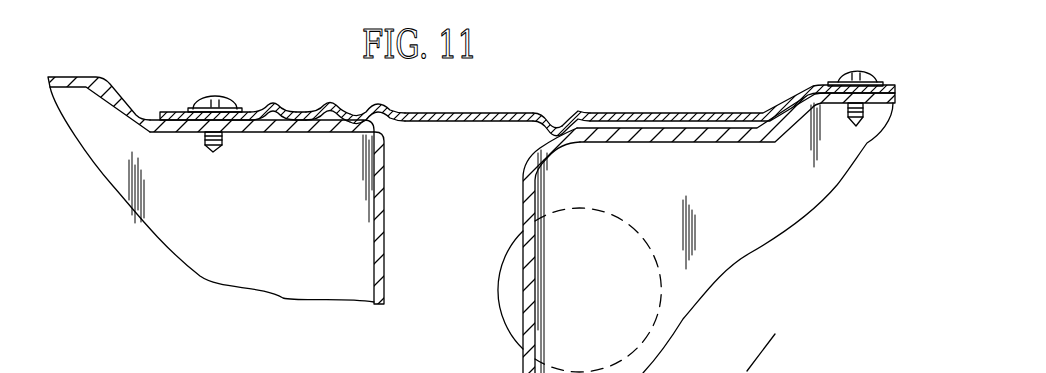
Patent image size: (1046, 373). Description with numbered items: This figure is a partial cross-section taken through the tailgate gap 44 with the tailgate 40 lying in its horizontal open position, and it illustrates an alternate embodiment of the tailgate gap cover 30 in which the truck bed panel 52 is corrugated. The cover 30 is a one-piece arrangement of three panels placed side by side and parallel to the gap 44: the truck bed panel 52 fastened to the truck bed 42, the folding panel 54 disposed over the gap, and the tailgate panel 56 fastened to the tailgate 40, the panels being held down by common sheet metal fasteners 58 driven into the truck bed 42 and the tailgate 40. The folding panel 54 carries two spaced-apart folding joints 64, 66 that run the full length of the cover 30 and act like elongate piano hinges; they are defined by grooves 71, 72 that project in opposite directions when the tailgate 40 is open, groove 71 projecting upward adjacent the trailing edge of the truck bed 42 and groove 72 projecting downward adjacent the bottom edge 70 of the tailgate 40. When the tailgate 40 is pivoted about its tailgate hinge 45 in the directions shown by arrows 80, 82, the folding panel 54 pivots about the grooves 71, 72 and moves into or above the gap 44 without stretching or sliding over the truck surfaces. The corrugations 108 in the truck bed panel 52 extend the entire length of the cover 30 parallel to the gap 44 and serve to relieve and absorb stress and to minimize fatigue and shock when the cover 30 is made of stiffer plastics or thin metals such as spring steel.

The tailgate gap cover 30 is at (536, 54).
The tailgate 40 is at (832, 194).
The truck bed 42 is at (82, 77).
The tailgate gap 44 is at (450, 287).
The tailgate hinge 45 is at (500, 330).
The truck bed panel 52 is at (336, 96).
The folding panel 54 is at (465, 110).
The tailgate panel 56 is at (707, 122).
The sheet metal fastener 58 is at (205, 97).
The folding joint 64 is at (386, 105).
The folding joint 66 is at (570, 112).
The bottom edge of the tailgate 70 is at (510, 168).
The groove 71 is at (380, 100).
The groove 72 is at (550, 120).
The arrow 80 is at (763, 354).
The arrow 82 is at (746, 335).
The corrugations 108 is at (291, 90).